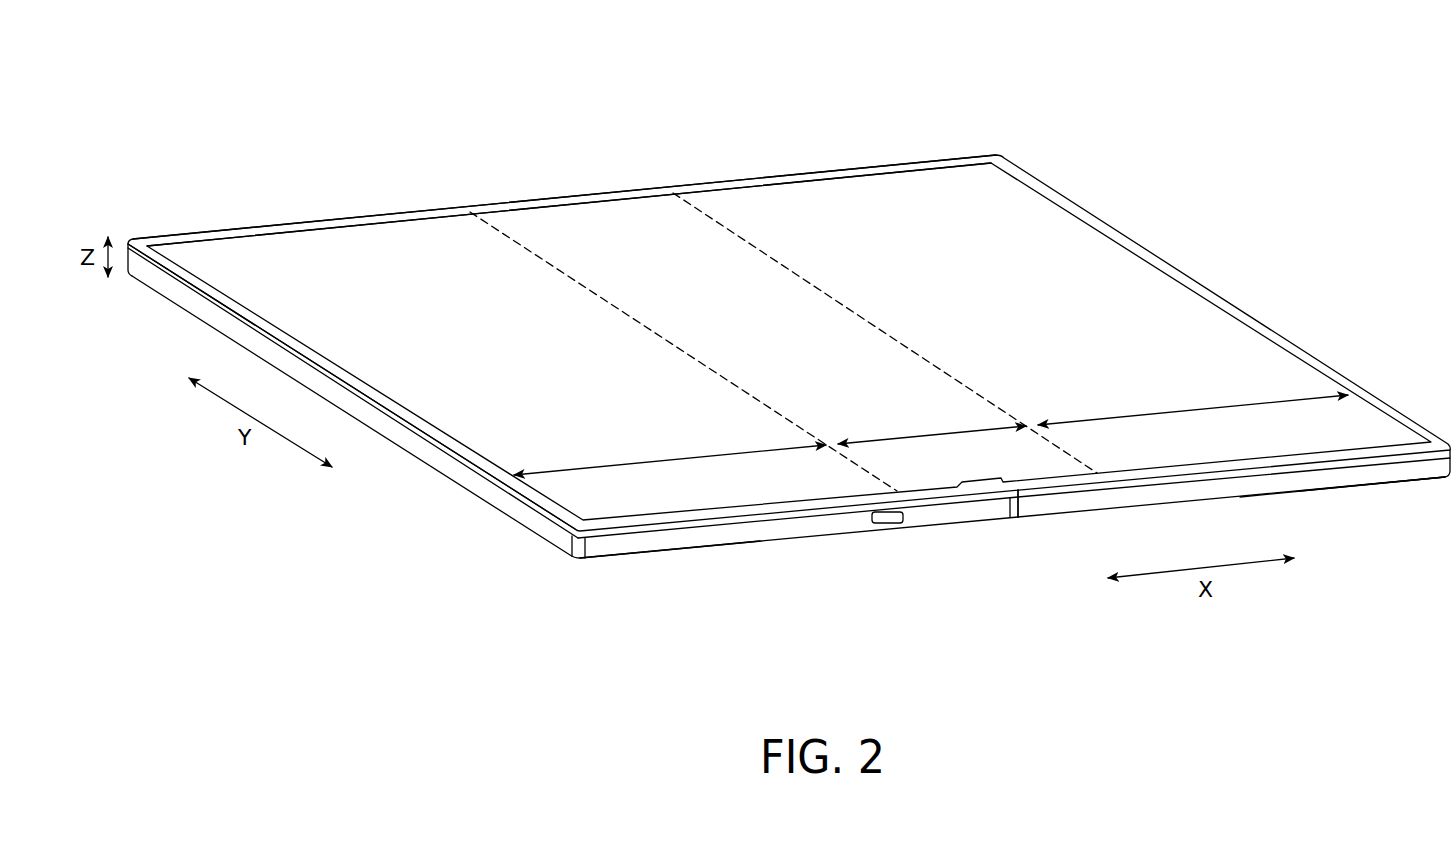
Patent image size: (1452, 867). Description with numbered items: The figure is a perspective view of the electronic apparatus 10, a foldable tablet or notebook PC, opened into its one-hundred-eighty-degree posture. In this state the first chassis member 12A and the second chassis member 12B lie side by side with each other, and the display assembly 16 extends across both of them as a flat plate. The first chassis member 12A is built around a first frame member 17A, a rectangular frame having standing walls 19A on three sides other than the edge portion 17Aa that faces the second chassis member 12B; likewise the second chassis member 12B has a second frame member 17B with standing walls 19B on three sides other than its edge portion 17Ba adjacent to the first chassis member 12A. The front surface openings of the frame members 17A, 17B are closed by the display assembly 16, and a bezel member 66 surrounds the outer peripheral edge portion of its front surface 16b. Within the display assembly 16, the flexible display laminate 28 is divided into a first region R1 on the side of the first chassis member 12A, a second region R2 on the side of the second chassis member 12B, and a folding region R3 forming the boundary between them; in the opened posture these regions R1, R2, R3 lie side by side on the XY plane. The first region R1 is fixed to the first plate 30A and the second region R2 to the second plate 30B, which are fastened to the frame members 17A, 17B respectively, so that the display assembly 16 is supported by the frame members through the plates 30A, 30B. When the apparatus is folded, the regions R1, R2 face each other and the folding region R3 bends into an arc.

The electronic apparatus 10 is at (173, 139).
The first chassis member 12A is at (723, 555).
The second chassis member 12B is at (1345, 500).
The display assembly 16 is at (789, 328).
The front surface 16b is at (758, 200).
The first frame member 17A is at (620, 558).
The edge portion 17Aa is at (1023, 512).
The second frame member 17B is at (1410, 480).
The edge portion 17Ba is at (1013, 503).
The standing walls 19A is at (436, 468).
The standing walls 19B is at (1246, 485).
The display laminate 28 is at (1024, 226).
The first plate 30A is at (370, 262).
The second plate 30B is at (888, 210).
The bezel member 66 is at (246, 224).
The first region R1 is at (670, 455).
The second region R2 is at (1193, 404).
The folding region R3 is at (932, 425).